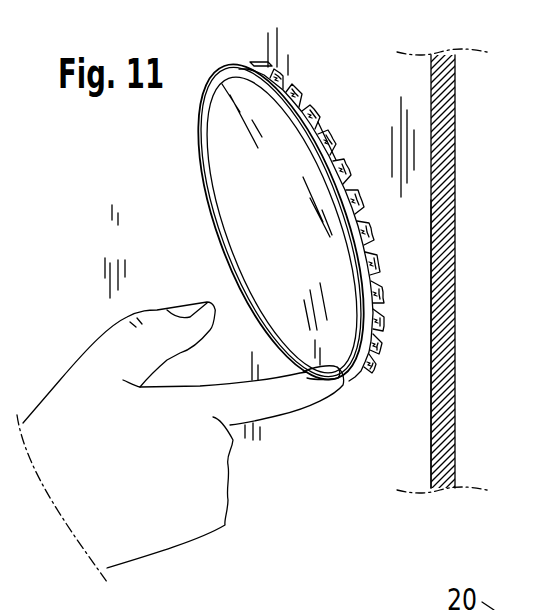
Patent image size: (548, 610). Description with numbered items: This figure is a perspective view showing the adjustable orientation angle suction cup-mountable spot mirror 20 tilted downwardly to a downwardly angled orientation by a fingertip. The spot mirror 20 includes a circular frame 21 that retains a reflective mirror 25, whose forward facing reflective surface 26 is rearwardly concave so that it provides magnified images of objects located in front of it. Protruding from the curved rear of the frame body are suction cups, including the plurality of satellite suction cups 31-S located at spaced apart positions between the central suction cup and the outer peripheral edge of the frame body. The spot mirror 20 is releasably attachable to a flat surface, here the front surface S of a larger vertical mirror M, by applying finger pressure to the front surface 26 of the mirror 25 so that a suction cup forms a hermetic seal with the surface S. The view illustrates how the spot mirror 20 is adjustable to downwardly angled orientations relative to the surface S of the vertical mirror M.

The spot mirror 20 is at (222, 52).
The circular frame 21 is at (196, 148).
The reflective mirror 25 is at (225, 187).
The reflective surface 26 is at (288, 253).
The satellite suction cups 31-S is at (323, 122).
The vertical mirror M is at (461, 345).
The front surface S is at (406, 420).